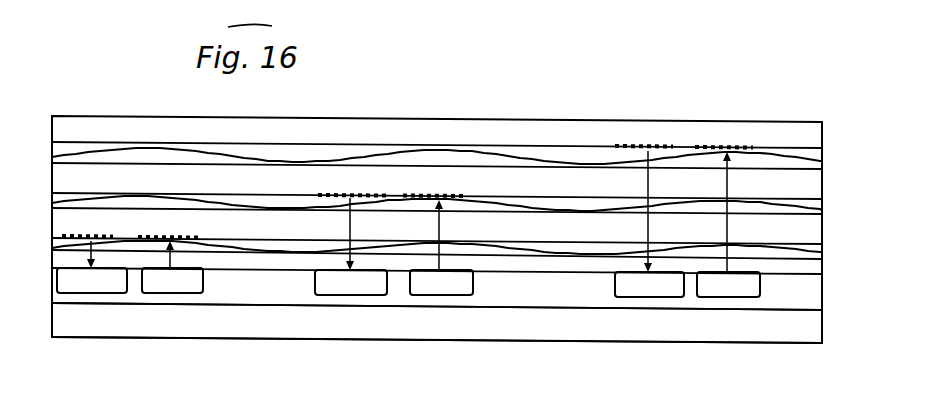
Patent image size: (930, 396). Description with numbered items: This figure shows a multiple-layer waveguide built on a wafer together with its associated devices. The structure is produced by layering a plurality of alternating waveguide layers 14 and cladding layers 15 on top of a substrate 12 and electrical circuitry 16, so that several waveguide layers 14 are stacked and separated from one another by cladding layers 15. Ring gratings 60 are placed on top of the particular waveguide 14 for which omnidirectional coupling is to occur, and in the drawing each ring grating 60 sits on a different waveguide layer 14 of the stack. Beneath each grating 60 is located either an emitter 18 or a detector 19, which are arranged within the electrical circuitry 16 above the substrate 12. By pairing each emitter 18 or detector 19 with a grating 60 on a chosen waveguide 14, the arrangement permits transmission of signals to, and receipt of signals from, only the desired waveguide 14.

The substrate 12 is at (820, 327).
The waveguide layer 14 is at (52, 244).
The cladding layer 15 is at (52, 174).
The electrical circuitry 16 is at (820, 292).
The emitter 18 is at (184, 291).
The detector 19 is at (104, 291).
The ring grating 60 is at (148, 233).